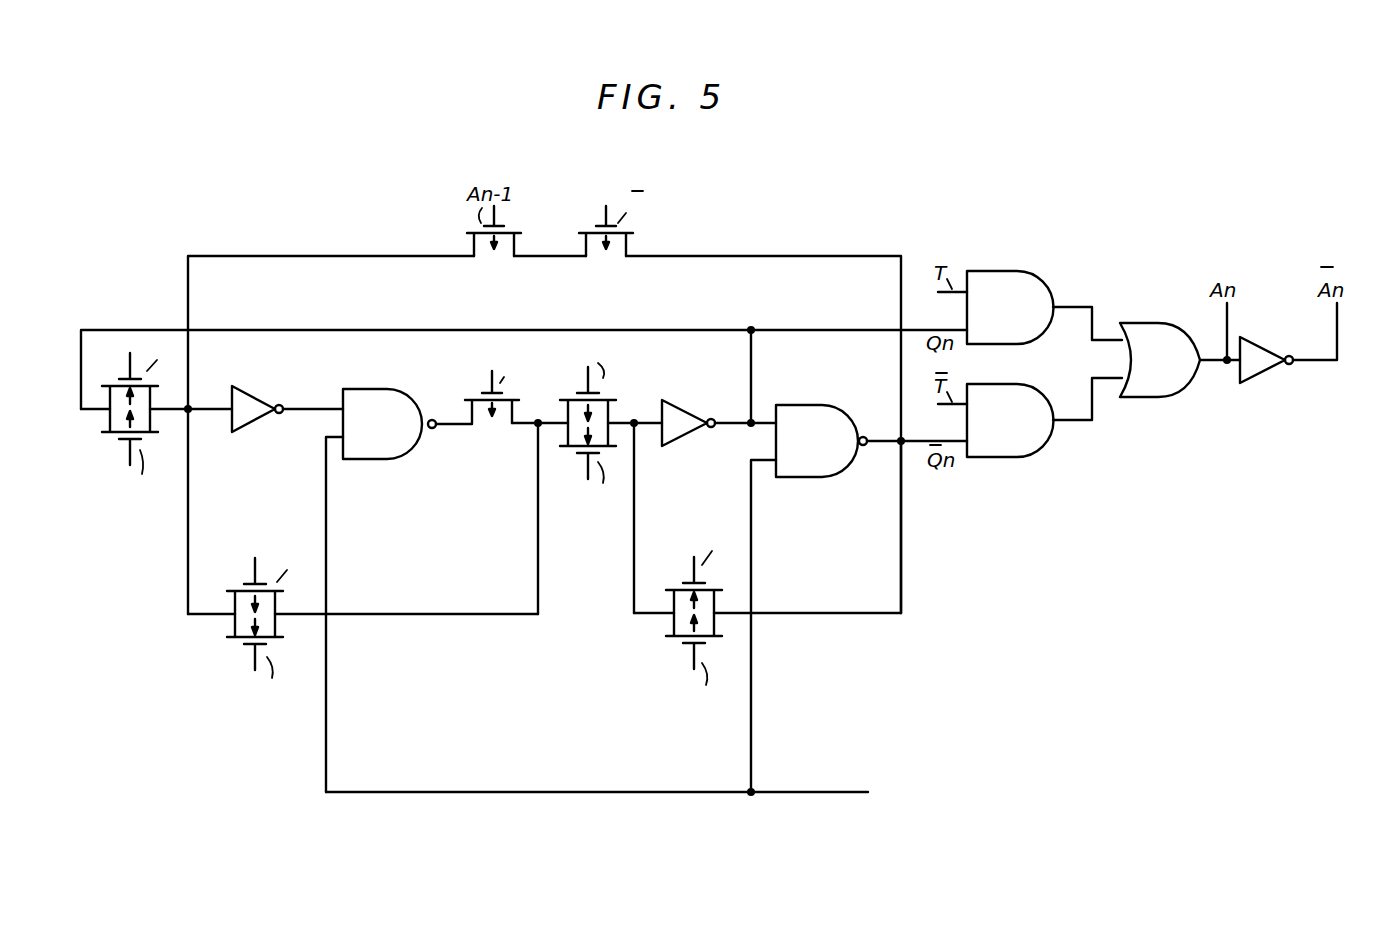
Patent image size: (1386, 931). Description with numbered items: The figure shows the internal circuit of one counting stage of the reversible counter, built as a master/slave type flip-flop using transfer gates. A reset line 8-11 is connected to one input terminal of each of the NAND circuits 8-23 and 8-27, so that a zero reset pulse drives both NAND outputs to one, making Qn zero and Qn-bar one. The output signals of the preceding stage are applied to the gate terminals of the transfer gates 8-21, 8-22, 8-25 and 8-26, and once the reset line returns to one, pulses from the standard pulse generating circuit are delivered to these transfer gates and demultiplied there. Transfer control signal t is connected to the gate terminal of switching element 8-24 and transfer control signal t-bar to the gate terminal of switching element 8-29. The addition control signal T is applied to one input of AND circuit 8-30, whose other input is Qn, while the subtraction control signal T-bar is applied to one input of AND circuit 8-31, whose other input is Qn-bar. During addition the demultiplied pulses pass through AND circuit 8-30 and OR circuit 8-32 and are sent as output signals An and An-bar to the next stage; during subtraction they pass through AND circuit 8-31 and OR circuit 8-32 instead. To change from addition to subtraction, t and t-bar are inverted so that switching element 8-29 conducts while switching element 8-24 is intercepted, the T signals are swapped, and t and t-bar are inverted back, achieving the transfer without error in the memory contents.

The reset line 8-11 is at (783, 793).
The transfer gate 8-21 is at (108, 411).
The transfer gate 8-22 is at (222, 625).
The NAND circuit 8-23 is at (378, 456).
The switching element 8-24 is at (493, 418).
The transfer gate 8-25 is at (612, 411).
The transfer gate 8-26 is at (665, 627).
The NAND circuit 8-27 is at (813, 463).
The switching element 8-29 is at (608, 258).
The AND circuit 8-30 is at (1008, 338).
The AND circuit 8-31 is at (1008, 452).
The OR circuit 8-32 is at (1153, 387).